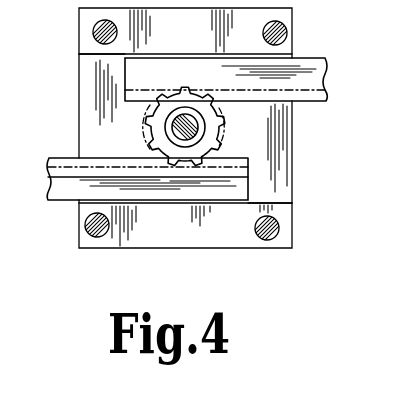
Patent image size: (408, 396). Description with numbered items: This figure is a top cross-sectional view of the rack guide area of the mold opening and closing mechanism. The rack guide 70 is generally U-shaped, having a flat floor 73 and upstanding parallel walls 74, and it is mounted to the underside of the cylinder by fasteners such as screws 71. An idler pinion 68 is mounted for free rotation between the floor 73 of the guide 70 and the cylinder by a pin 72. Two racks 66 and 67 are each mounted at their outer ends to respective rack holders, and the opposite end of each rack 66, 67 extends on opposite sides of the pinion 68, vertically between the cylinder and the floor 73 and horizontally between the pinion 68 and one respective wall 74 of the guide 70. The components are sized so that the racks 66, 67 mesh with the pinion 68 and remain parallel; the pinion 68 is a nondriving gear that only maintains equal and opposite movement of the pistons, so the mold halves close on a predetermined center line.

The rack 66 is at (66, 202).
The rack 67 is at (325, 58).
The idler pinion 68 is at (213, 153).
The rack guide 70 is at (78, 37).
The screw 71 is at (280, 225).
The pin 72 is at (205, 121).
The floor 73 is at (285, 162).
The wall 74 is at (95, 56).